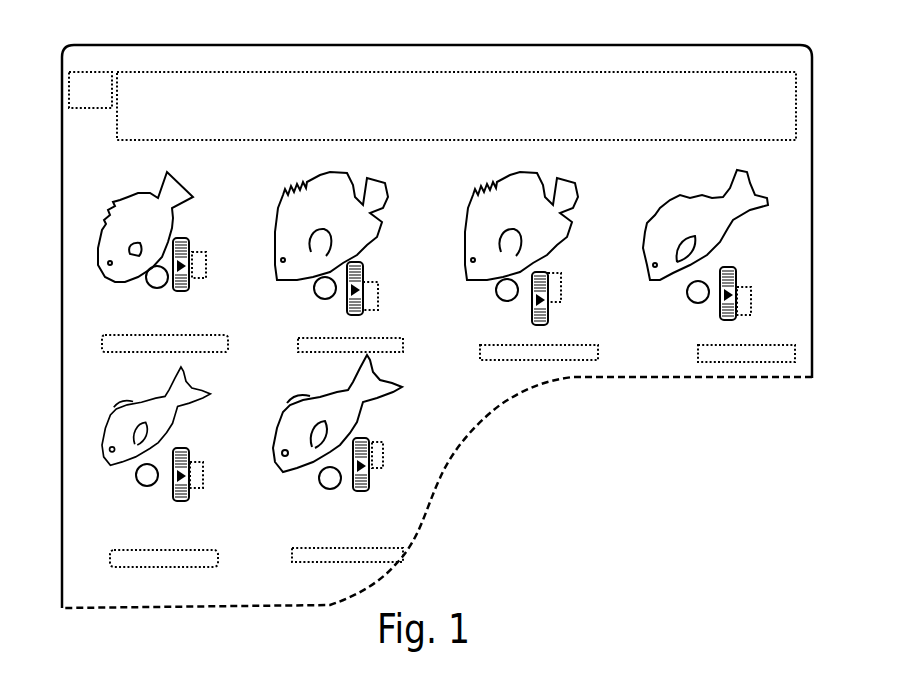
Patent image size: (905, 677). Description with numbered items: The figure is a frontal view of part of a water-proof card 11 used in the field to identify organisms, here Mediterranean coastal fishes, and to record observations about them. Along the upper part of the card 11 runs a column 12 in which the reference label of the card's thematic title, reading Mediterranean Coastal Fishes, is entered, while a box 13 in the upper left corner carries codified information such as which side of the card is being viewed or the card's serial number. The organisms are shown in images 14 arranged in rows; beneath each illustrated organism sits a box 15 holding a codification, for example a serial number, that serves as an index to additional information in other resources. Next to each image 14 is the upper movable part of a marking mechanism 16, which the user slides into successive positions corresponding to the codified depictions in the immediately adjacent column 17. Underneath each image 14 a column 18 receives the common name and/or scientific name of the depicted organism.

The water-proof card 11 is at (272, 44).
The column 12 is at (532, 92).
The box 13 is at (88, 88).
The images 14 is at (130, 218).
The box 15 is at (147, 281).
The marking mechanism 16 is at (176, 290).
The column 17 is at (207, 270).
The column 18 is at (202, 340).